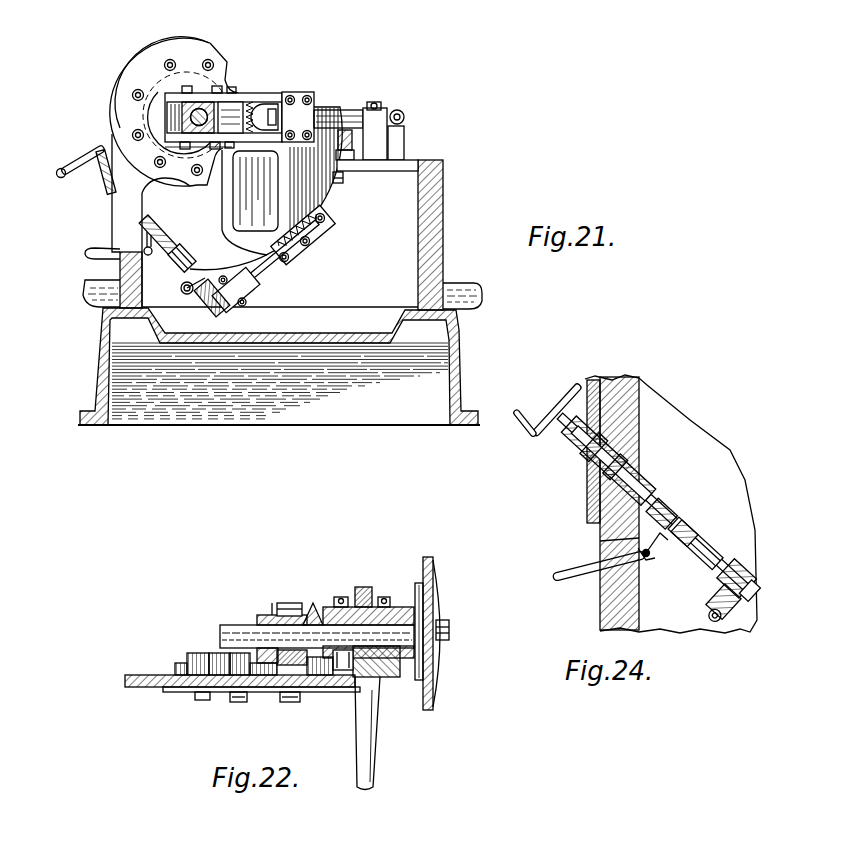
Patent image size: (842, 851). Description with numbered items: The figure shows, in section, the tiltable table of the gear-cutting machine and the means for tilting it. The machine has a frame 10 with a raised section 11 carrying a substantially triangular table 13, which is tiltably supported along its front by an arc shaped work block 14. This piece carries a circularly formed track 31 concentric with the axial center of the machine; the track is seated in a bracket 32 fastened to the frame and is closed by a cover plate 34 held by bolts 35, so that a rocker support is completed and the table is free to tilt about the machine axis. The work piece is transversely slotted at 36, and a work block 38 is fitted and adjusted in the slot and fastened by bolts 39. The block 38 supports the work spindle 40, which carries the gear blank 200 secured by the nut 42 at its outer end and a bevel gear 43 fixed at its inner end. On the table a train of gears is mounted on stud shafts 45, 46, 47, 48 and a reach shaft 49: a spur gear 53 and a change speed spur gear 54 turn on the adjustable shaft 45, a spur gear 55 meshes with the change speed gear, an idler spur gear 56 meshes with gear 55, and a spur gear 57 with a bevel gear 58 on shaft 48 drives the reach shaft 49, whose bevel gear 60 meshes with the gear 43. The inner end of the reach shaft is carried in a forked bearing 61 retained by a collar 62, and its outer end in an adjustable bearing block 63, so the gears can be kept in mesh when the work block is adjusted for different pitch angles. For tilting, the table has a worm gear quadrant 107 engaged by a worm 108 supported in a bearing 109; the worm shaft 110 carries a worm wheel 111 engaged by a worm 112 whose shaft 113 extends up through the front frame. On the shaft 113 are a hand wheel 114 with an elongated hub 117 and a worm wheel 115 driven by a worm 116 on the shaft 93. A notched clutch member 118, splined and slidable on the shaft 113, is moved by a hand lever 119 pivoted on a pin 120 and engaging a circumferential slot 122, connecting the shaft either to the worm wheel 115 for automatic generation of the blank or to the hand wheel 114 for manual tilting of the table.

In FIG. 21, the frame 10 is at (106, 309).
In FIG. 21, the raised section 11 is at (443, 174).
In FIG. 24, the raised section 11 is at (628, 398).
In FIG. 21, the table 13 is at (396, 163).
In FIG. 22, the table 13 is at (133, 674).
In FIG. 21, the arc shaped work block 14 is at (306, 96).
In FIG. 21, the track 31 is at (179, 82).
In FIG. 22, the track 31 is at (372, 676).
In FIG. 21, the bracket 32 is at (148, 56).
In FIG. 21, the cover plate 34 is at (140, 80).
In FIG. 21, the bolts 35 is at (132, 132).
In FIG. 21, the transverse slot 36 is at (260, 104).
In FIG. 22, the transverse slot 36 is at (341, 672).
In FIG. 21, the work block 38 is at (242, 98).
In FIG. 22, the work block 38 is at (400, 606).
In FIG. 21, the bolts 39 is at (218, 88).
In FIG. 22, the bolts 39 is at (383, 597).
In FIG. 21, the work spindle 40 is at (198, 100).
In FIG. 22, the work spindle 40 is at (232, 626).
In FIG. 22, the nut 42 is at (448, 624).
In FIG. 21, the bevel gear 43 is at (250, 104).
In FIG. 22, the bevel gear 43 is at (313, 602).
In FIG. 22, the stud shaft 45 is at (212, 655).
In FIG. 22, the stud shaft 46 is at (240, 703).
In FIG. 22, the stud shaft 47 is at (291, 703).
In FIG. 21, the stud shaft 48 is at (345, 182).
In FIG. 21, the reach shaft 49 is at (404, 117).
In FIG. 22, the spur gear 53 is at (180, 666).
In FIG. 22, the change speed spur gear 54 is at (192, 654).
In FIG. 22, the spur gear 55 is at (232, 654).
In FIG. 22, the idler spur gear 56 is at (320, 676).
In FIG. 21, the spur gear 57 is at (353, 158).
In FIG. 21, the bevel gear 58 is at (343, 130).
In FIG. 21, the bevel gear 60 is at (270, 106).
In FIG. 22, the bevel gear 60 is at (273, 614).
In FIG. 22, the forked bearing 61 is at (289, 603).
In FIG. 22, the collar 62 is at (259, 614).
In FIG. 21, the bearing block 63 is at (386, 108).
In FIG. 21, the shaft 93 is at (104, 339).
In FIG. 24, the shaft 93 is at (711, 620).
In FIG. 21, the worm gear quadrant 107 is at (306, 190).
In FIG. 22, the worm gear quadrant 107 is at (365, 744).
In FIG. 21, the worm 108 is at (306, 248).
In FIG. 21, the bearing 109 is at (322, 224).
In FIG. 21, the shaft 110 is at (255, 276).
In FIG. 21, the worm wheel 111 is at (246, 318).
In FIG. 21, the worm 112 is at (208, 302).
In FIG. 21, the shaft 113 is at (186, 294).
In FIG. 24, the shaft 113 is at (635, 455).
In FIG. 21, the hand wheel 114 is at (76, 182).
In FIG. 24, the hand wheel 114 is at (557, 408).
In FIG. 21, the worm wheel 115 is at (181, 289).
In FIG. 24, the worm wheel 115 is at (731, 571).
In FIG. 21, the worm 116 is at (105, 356).
In FIG. 24, the worm 116 is at (722, 624).
In FIG. 21, the elongated hub 117 is at (148, 226).
In FIG. 24, the elongated hub 117 is at (641, 480).
In FIG. 21, the notched clutch member 118 is at (178, 250).
In FIG. 24, the notched clutch member 118 is at (683, 530).
In FIG. 21, the hand lever 119 is at (90, 257).
In FIG. 24, the hand lever 119 is at (573, 569).
In FIG. 21, the pin 120 is at (143, 250).
In FIG. 24, the pin 120 is at (646, 560).
In FIG. 24, the circumferential slot 122 is at (655, 513).
In FIG. 22, the gear blank 200 is at (436, 585).